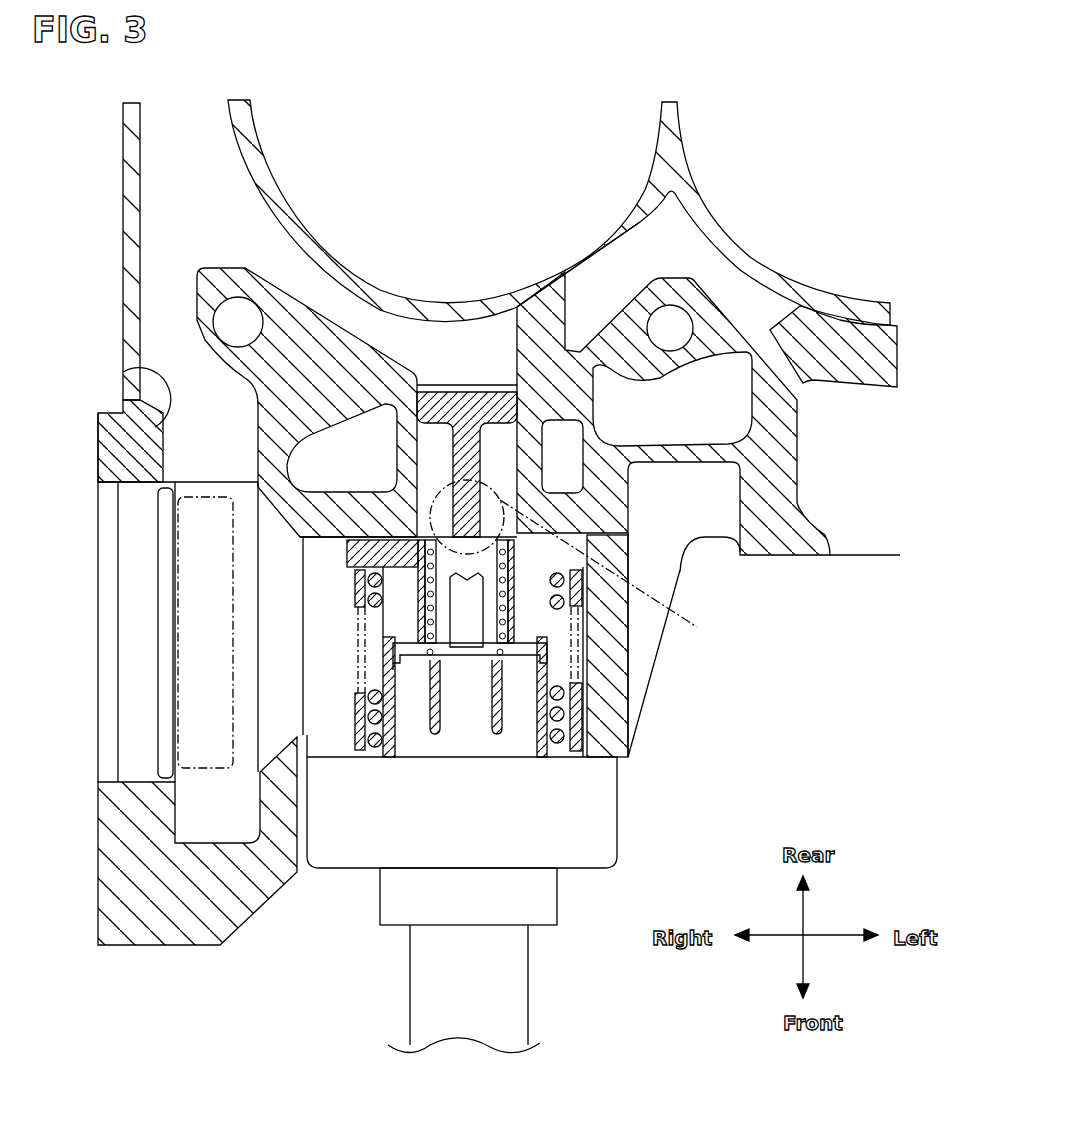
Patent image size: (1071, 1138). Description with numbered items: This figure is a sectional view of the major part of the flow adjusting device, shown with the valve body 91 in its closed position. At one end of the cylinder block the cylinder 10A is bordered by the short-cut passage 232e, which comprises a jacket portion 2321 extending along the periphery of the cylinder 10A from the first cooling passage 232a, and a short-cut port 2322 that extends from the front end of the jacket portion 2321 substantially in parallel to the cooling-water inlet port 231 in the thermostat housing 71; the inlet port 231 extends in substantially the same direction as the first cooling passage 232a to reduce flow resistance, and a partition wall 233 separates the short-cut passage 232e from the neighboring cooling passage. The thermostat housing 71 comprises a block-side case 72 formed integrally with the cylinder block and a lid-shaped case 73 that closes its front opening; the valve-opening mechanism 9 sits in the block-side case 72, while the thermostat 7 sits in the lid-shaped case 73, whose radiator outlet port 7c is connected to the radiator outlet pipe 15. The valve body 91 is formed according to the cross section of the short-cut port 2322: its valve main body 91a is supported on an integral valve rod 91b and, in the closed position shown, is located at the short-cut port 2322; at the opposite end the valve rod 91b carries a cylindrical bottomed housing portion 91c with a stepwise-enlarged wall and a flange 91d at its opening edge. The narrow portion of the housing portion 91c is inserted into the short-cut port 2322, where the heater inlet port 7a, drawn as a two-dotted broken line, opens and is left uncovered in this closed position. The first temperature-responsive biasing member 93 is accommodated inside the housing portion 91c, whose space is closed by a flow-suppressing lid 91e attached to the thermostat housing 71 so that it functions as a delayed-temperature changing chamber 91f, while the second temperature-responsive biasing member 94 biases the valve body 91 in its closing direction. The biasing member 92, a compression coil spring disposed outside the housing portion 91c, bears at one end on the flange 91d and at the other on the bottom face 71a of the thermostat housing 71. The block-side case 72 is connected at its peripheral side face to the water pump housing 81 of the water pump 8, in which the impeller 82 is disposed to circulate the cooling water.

The cylinder 10A is at (268, 190).
The first cooling passage 232a is at (162, 172).
The cooling-water inlet port 231 is at (120, 374).
The short-cut passage 232e is at (333, 323).
The jacket portion 2321 is at (380, 325).
The partition wall 233 is at (541, 326).
The short-cut port 2322 is at (505, 465).
The valve main body 91a is at (462, 384).
The valve rod 91b is at (463, 452).
The housing portion 91c is at (460, 455).
The bottom face 71a is at (357, 548).
The biasing member 92 is at (361, 606).
The first temperature-responsive biasing member 93 is at (362, 627).
The second temperature-responsive biasing member 94 is at (358, 713).
The valve-opening mechanism 9 is at (595, 690).
The valve body 91 is at (534, 553).
The flange 91d is at (350, 722).
The flow-suppressing lid 91e is at (447, 720).
The delayed-temperature changing chamber 91f is at (487, 640).
The block-side case 72 is at (618, 540).
The heater inlet port 7a is at (615, 574).
The thermostat housing 71 is at (612, 742).
The lid-shaped case 73 is at (600, 843).
The radiator outlet port 7c is at (545, 900).
The thermostat 7 is at (356, 850).
The radiator outlet pipe 15 is at (514, 1010).
The impeller 82 is at (157, 740).
The water pump housing 81 is at (182, 930).
The water pump 8 is at (236, 948).